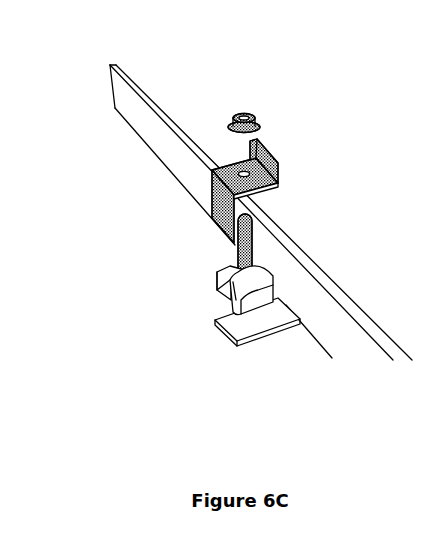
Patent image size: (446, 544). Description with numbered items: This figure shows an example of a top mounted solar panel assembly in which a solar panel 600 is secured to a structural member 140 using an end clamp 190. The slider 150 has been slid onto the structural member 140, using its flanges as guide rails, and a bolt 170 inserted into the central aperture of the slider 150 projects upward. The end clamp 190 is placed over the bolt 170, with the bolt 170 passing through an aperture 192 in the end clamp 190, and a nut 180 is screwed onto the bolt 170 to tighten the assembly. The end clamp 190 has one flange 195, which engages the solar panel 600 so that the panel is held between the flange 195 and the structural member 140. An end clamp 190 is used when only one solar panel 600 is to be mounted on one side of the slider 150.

The solar panel 600 is at (161, 158).
The end clamp 190 is at (278, 190).
The flange 195 is at (279, 156).
The aperture 192 is at (242, 172).
The nut 180 is at (252, 108).
The bolt 170 is at (236, 245).
The slider 150 is at (253, 297).
The structural member 140 is at (287, 333).